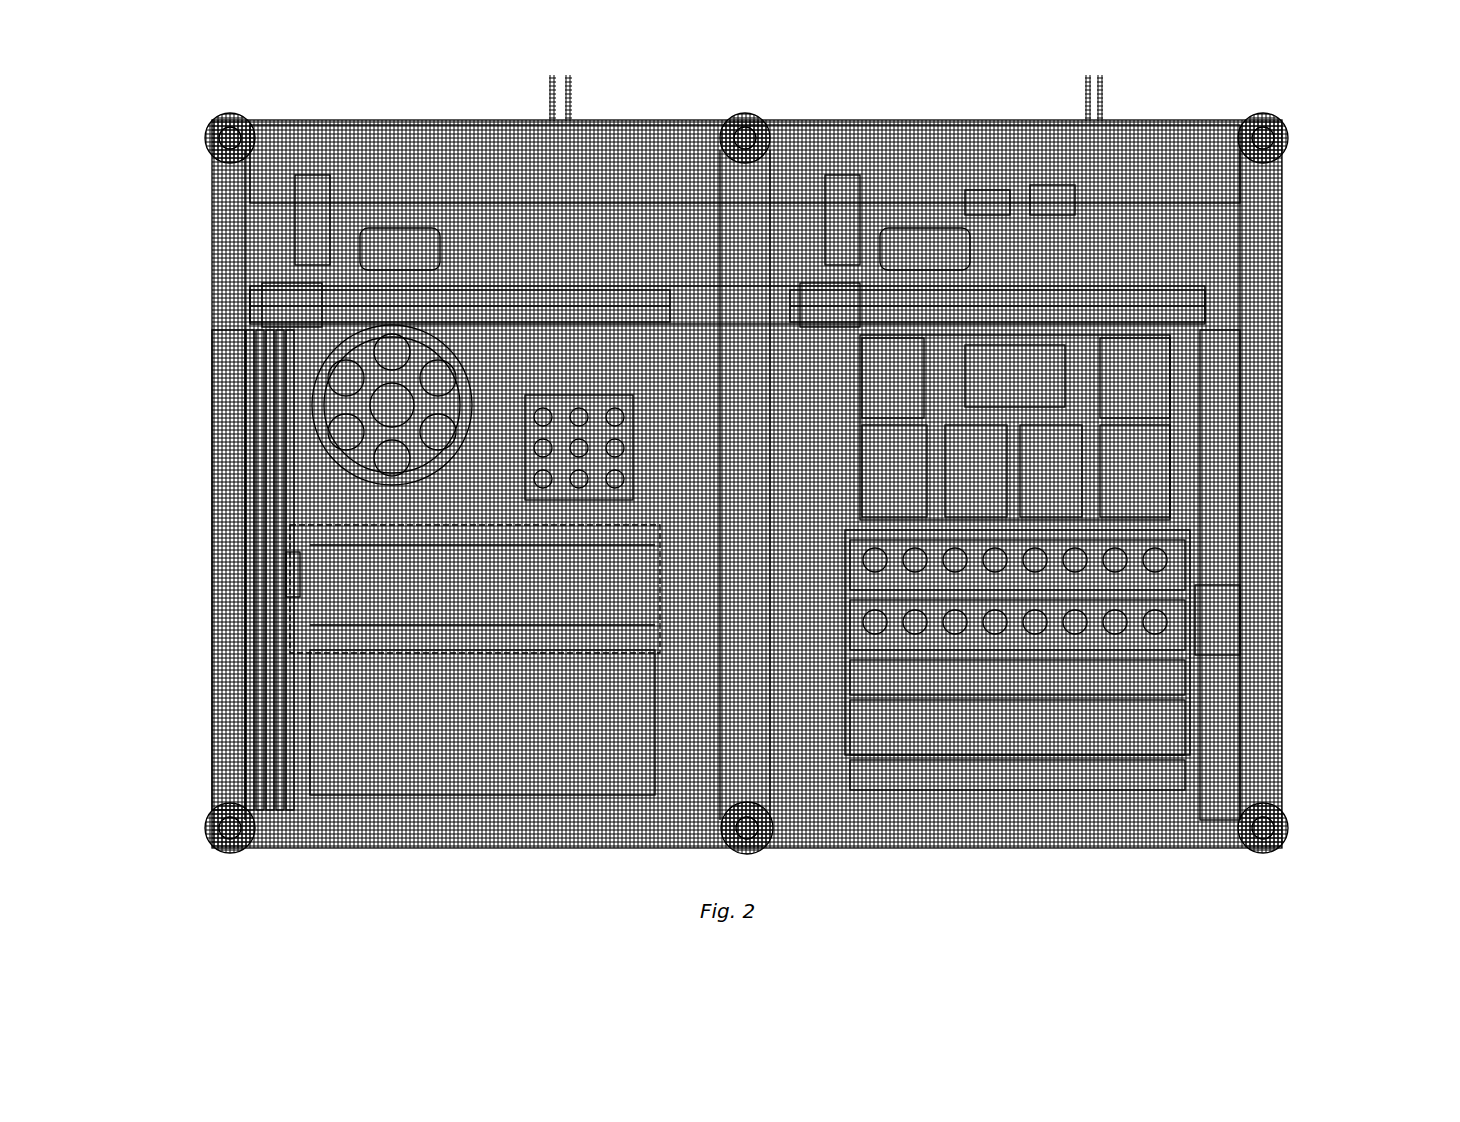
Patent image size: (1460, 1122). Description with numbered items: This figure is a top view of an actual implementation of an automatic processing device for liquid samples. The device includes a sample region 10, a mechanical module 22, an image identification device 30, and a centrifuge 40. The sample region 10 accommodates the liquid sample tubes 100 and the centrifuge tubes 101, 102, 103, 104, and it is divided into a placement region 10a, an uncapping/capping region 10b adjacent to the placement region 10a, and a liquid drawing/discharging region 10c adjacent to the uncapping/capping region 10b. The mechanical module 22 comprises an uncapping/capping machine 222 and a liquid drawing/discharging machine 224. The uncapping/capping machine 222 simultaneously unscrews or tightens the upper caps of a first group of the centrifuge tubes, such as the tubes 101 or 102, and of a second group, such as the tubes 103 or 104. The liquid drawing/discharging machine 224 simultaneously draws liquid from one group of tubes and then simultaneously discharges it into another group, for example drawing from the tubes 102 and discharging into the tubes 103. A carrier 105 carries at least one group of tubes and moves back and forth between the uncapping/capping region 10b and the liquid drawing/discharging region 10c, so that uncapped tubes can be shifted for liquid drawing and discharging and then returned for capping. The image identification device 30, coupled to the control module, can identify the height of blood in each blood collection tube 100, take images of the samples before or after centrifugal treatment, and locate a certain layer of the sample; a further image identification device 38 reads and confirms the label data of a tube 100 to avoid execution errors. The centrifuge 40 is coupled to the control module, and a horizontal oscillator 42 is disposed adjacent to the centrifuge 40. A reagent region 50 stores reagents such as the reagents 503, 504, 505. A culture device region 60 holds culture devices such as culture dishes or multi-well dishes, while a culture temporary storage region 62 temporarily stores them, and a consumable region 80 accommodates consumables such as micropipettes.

The sample region 10 is at (120, 56).
The placement region 10a is at (488, 802).
The uncapping/capping region 10b is at (290, 527).
The liquid drawing/discharging region 10c is at (1282, 620).
The mechanical module 22 is at (1408, 70).
The uncapping/capping machine 222 is at (245, 303).
The liquid drawing/discharging machine 224 is at (1282, 300).
The image identification device 30 is at (1282, 395).
The image identification device 38 is at (245, 572).
The centrifuge 40 is at (245, 398).
The horizontal oscillator 42 is at (495, 195).
The reagent region 50 is at (1012, 805).
The culture device region 60 is at (1052, 195).
The culture temporary storage region 62 is at (998, 200).
The consumable region 80 is at (1282, 478).
The liquid sample tube 100 is at (245, 660).
The centrifuge tube 101 is at (245, 763).
The centrifuge tube 102 is at (245, 797).
The centrifuge tube 103 is at (245, 697).
The centrifuge tube 104 is at (245, 730).
The carrier 105 is at (245, 612).
The reagent 503 is at (1282, 672).
The reagent 504 is at (1282, 716).
The reagent 505 is at (1282, 762).